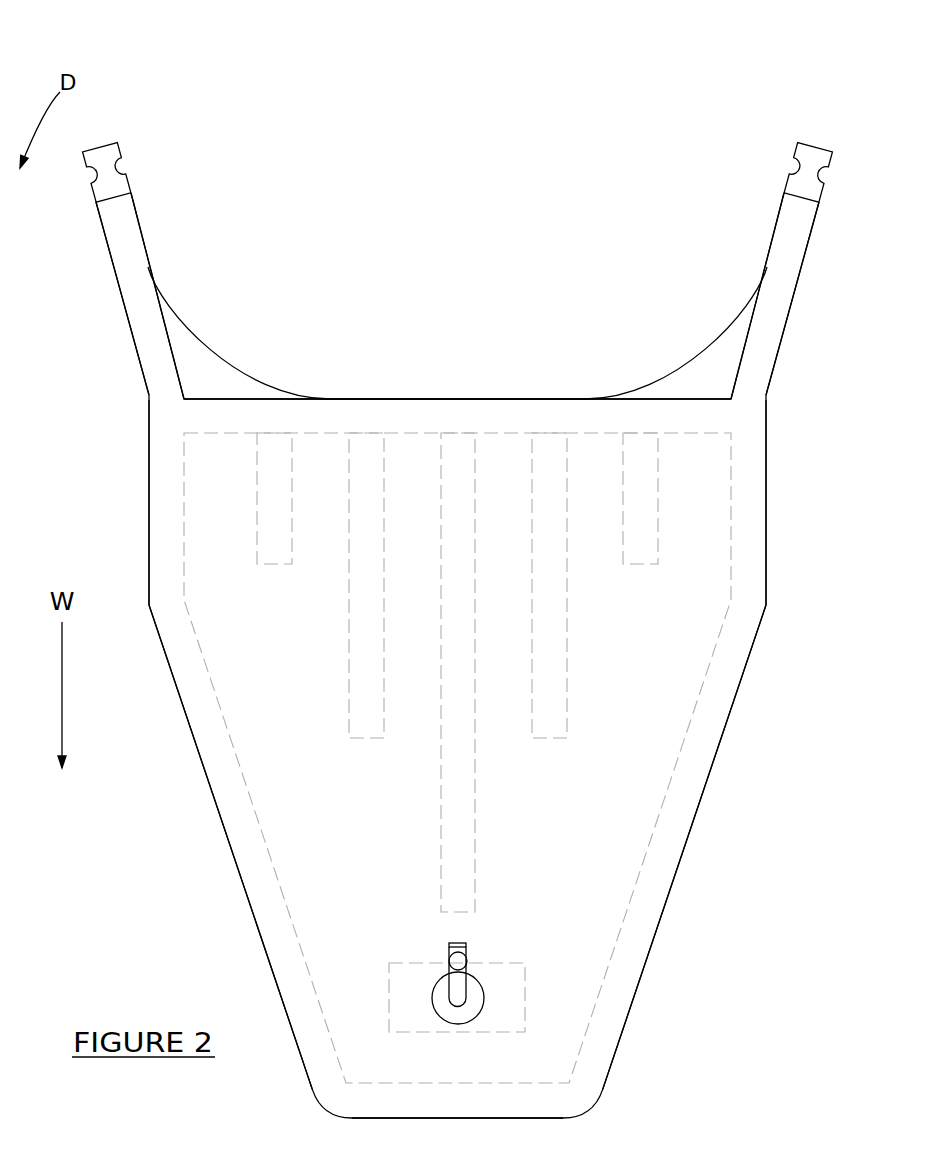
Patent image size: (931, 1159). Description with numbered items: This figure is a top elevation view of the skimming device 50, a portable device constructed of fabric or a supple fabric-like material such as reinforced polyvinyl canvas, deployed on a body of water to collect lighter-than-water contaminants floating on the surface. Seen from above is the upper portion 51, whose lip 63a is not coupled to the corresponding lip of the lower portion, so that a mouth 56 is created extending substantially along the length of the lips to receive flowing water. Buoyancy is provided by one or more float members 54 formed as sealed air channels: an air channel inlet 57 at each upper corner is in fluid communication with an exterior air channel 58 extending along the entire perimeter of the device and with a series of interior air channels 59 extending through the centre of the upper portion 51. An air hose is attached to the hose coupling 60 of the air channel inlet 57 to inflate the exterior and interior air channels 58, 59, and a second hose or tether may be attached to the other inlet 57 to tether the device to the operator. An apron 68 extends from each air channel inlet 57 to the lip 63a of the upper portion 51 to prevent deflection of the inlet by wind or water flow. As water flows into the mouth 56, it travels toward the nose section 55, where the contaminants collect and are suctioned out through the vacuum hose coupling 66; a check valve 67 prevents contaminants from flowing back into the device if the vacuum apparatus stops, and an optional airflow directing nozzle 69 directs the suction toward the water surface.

The skimming device 50 is at (810, 77).
The upper portion 51 is at (652, 744).
The float member 54 is at (752, 494).
The nose section 55 is at (618, 1092).
The mouth 56 is at (530, 248).
The air channel inlet 57 is at (128, 230).
The exterior air channel 58 is at (148, 494).
The interior air channel 59 is at (275, 552).
The hose coupling 60 is at (117, 155).
The lip 63a is at (455, 399).
The vacuum hose coupling 66 is at (466, 943).
The check valve 67 is at (465, 960).
The apron 68 is at (213, 375).
The airflow directing nozzle 69 is at (412, 962).